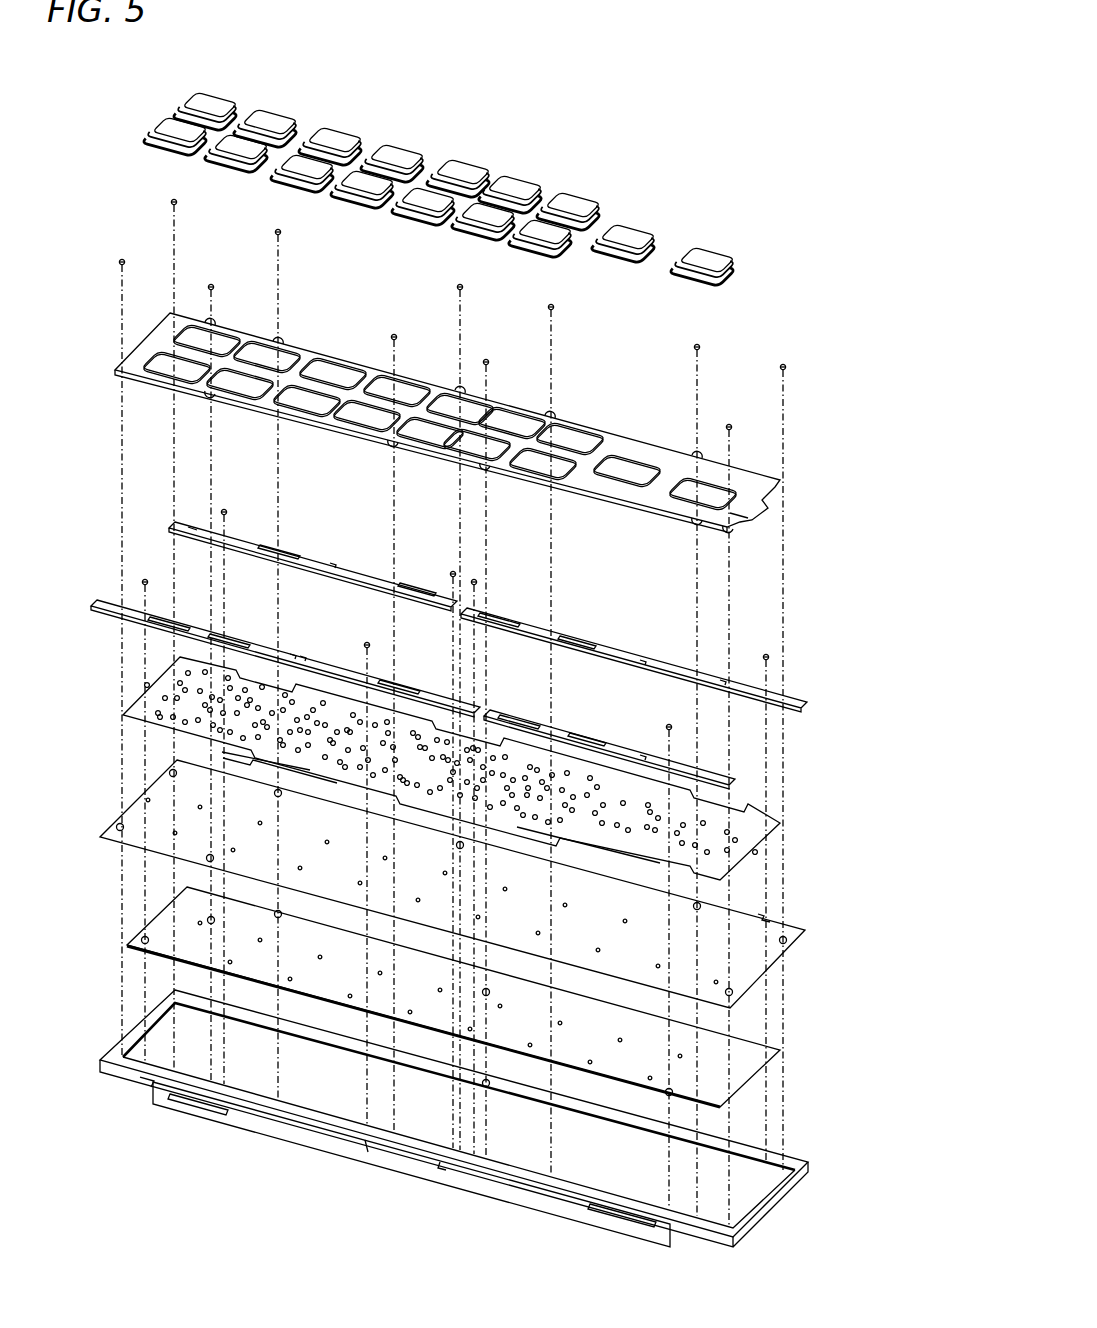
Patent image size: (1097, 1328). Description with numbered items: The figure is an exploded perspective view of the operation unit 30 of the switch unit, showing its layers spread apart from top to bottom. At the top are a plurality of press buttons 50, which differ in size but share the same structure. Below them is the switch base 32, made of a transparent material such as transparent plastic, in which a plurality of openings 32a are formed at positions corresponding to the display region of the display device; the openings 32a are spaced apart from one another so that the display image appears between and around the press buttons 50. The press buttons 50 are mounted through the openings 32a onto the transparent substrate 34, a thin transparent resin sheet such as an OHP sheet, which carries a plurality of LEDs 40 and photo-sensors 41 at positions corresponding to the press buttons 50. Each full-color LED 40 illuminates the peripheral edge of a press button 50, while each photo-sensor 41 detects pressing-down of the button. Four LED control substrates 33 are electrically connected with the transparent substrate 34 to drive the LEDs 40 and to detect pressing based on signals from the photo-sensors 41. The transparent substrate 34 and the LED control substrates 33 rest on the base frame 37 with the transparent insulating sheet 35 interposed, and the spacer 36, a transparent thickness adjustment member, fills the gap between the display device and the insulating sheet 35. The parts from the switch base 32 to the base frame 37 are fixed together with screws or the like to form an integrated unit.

The operation unit 30 is at (628, 124).
The press buttons 50 is at (268, 122).
The switch base 32 is at (474, 423).
The openings 32a is at (636, 462).
The LED control substrates 33 is at (727, 800).
The transparent substrate 34 is at (452, 764).
The LEDs 40 is at (180, 684).
The photo-sensors 41 is at (175, 716).
The insulating sheet 35 is at (775, 955).
The spacer 36 is at (752, 1076).
The base frame 37 is at (770, 1196).